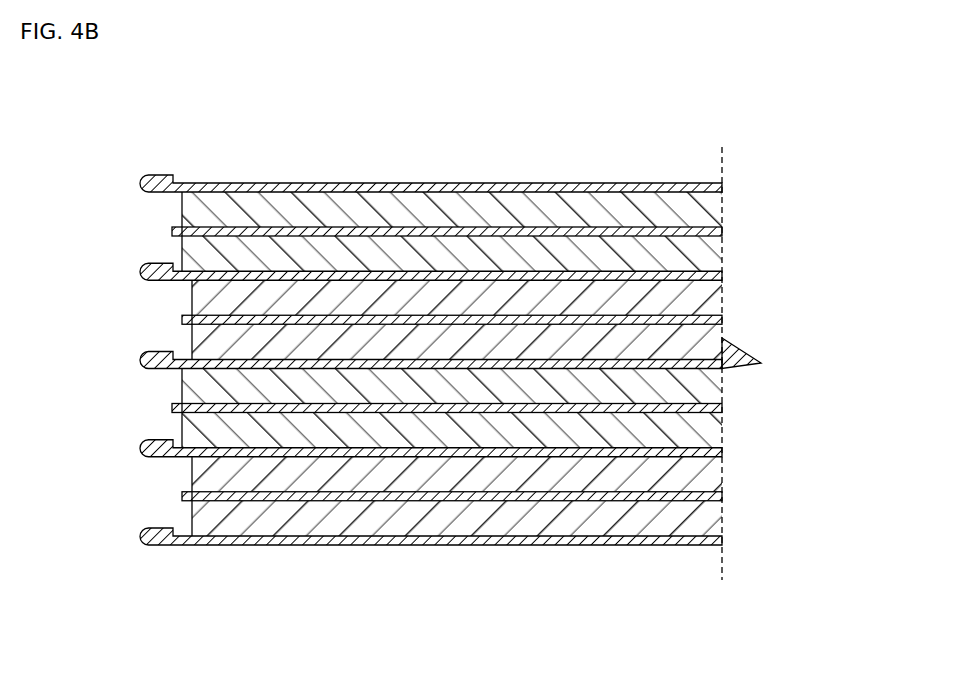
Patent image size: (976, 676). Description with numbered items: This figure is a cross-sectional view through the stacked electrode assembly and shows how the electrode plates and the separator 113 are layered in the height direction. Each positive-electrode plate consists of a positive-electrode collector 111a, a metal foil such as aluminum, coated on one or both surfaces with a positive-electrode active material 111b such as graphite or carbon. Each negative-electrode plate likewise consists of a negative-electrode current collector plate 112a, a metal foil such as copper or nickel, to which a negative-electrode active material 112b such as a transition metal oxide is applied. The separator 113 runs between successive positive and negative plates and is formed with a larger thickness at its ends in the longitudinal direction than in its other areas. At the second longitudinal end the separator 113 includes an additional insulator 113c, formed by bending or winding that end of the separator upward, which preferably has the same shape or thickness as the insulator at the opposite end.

The positive-electrode collector 111a is at (650, 493).
The positive-electrode active material 111b is at (502, 478).
The negative-electrode current collector plate 112a is at (393, 405).
The negative-electrode active material 112b is at (420, 393).
The separator 113 is at (300, 362).
The additional insulator 113c is at (140, 532).